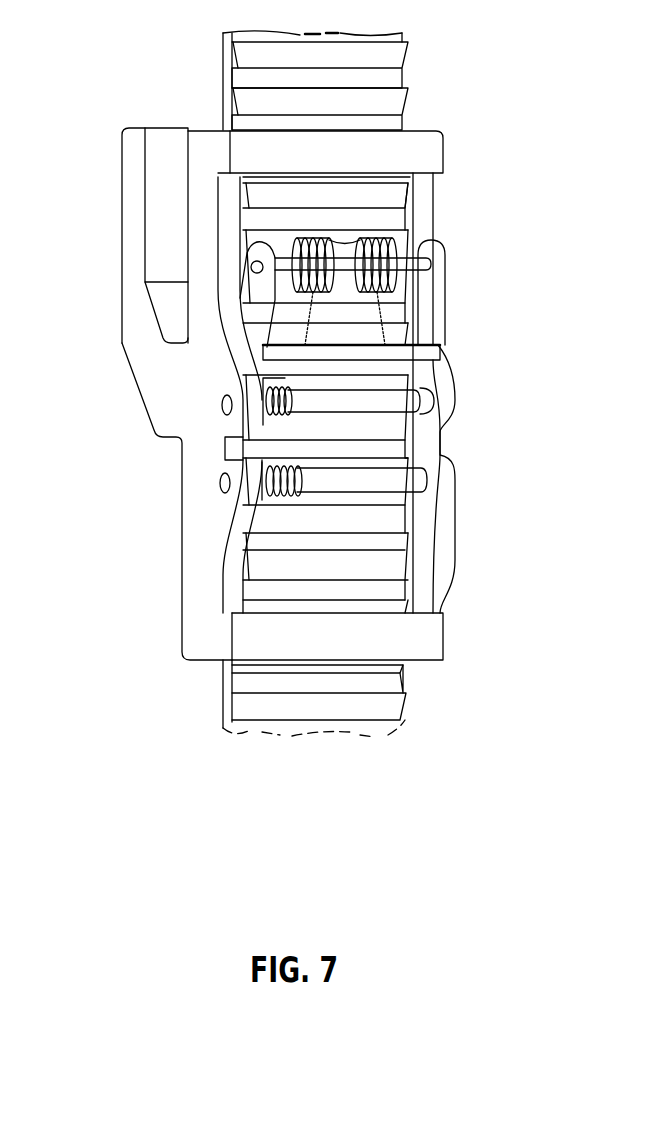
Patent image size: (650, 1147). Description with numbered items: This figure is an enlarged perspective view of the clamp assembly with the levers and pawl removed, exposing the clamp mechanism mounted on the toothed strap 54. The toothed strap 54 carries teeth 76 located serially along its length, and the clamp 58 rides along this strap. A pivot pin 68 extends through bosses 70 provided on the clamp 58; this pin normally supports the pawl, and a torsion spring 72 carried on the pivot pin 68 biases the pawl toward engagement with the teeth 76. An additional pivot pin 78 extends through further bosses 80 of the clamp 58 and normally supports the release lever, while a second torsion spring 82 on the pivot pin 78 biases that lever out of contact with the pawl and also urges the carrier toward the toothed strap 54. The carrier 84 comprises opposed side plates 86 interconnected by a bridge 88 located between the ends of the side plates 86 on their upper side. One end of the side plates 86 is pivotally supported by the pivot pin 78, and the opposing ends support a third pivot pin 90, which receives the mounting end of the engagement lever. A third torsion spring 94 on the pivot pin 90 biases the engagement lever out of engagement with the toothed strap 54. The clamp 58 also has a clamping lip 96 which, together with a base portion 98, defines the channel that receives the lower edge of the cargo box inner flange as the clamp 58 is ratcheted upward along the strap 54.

The toothed strap 54 is at (223, 75).
The clamp 58 is at (143, 410).
The pivot pin 68 is at (410, 478).
The bosses 70 is at (447, 510).
The torsion spring 72 is at (262, 483).
The teeth 76 is at (400, 45).
The pivot pin 78 is at (410, 398).
The bosses 80 is at (447, 418).
The second torsion spring 82 is at (265, 400).
The carrier 84 is at (243, 287).
The side plates 86 is at (437, 295).
The bridge 88 is at (430, 355).
The third pivot pin 90 is at (420, 262).
The third torsion spring 94 is at (392, 232).
The clamping lip 96 is at (132, 183).
The base portion 98 is at (200, 455).